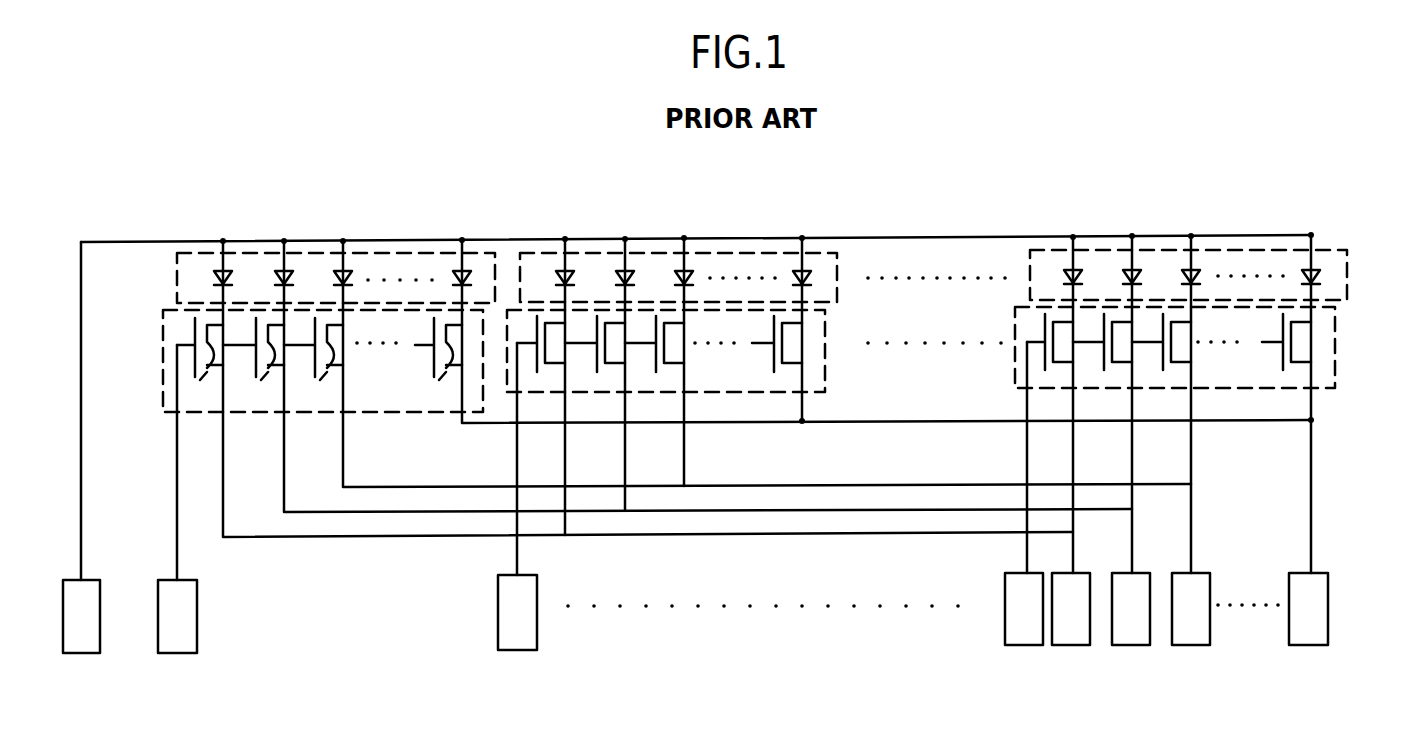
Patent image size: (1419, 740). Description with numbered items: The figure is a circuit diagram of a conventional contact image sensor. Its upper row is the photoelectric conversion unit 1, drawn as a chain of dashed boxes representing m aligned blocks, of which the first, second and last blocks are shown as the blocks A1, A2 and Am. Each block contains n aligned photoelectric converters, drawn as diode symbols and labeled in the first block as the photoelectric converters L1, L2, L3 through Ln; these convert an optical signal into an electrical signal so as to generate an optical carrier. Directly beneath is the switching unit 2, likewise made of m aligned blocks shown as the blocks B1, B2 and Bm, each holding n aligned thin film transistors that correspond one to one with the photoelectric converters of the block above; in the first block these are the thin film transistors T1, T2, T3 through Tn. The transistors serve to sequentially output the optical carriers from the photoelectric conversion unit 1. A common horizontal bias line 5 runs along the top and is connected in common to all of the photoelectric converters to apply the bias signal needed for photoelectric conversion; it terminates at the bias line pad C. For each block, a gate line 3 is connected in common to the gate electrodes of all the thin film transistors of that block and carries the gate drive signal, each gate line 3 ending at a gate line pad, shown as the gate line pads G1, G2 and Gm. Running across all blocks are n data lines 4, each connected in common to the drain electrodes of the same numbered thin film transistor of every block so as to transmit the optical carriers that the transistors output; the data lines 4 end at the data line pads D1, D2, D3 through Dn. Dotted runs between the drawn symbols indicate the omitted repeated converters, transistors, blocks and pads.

The photoelectric conversion unit 1 is at (767, 239).
The switching unit 2 is at (761, 385).
The gate line 3 is at (175, 507).
The data line 4 is at (260, 537).
The bias line 5 is at (81, 493).
The first block of the photoelectric conversion unit A1 is at (310, 277).
The second block of the photoelectric conversion unit A2 is at (712, 250).
The m-th block of the photoelectric conversion unit Am is at (1268, 248).
The first block of the switching unit B1 is at (298, 361).
The second block of the switching unit B2 is at (738, 392).
The m-th block of the switching unit Bm is at (1335, 362).
The first photoelectric converter L1 is at (208, 277).
The second photoelectric converter L2 is at (270, 277).
The third photoelectric converter L3 is at (328, 277).
The n-th photoelectric converter Ln is at (448, 268).
The first thin film transistor T1 is at (200, 364).
The second thin film transistor T2 is at (253, 364).
The third thin film transistor T3 is at (313, 364).
The n-th thin film transistor Tn is at (438, 364).
The bias line pad C is at (81, 616).
The first gate line pad G1 is at (177, 616).
The second gate line pad G2 is at (517, 612).
The m-th gate line pad Gm is at (1024, 609).
The first data line pad D1 is at (1071, 609).
The second data line pad D2 is at (1131, 609).
The third data line pad D3 is at (1191, 609).
The n-th data line pad Dn is at (1308, 609).